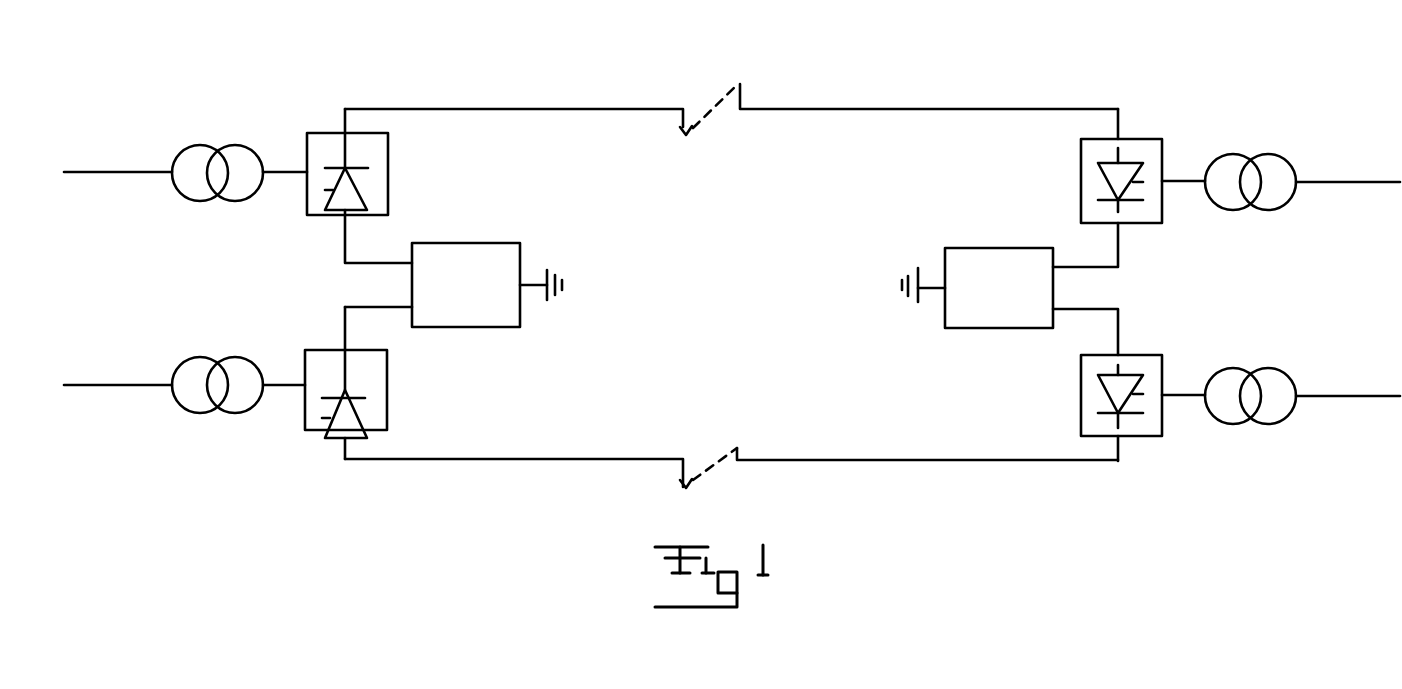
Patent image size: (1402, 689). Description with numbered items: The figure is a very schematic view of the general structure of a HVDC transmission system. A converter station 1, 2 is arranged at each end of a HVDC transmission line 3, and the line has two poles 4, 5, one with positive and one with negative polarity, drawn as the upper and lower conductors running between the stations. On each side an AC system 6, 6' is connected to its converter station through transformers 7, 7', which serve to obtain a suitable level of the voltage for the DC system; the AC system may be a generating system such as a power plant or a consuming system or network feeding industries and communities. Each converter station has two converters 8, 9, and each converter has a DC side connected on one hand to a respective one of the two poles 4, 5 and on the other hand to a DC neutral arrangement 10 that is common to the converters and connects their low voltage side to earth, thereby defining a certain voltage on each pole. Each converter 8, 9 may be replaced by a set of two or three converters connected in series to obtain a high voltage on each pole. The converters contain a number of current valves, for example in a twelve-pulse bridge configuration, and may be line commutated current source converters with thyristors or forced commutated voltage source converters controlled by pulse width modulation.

The converter station 1 is at (322, 124).
The converter station 2 is at (1132, 134).
The HVDC transmission line 3 is at (655, 110).
The pole 4 is at (574, 110).
The pole 5 is at (579, 458).
The AC system 6 is at (185, 246).
The AC system 6' is at (1281, 256).
The transformers 7 is at (239, 246).
The transformers 7' is at (1229, 256).
The converter 8 is at (390, 175).
The converter 9 is at (390, 393).
The DC neutral arrangement 10 is at (520, 243).